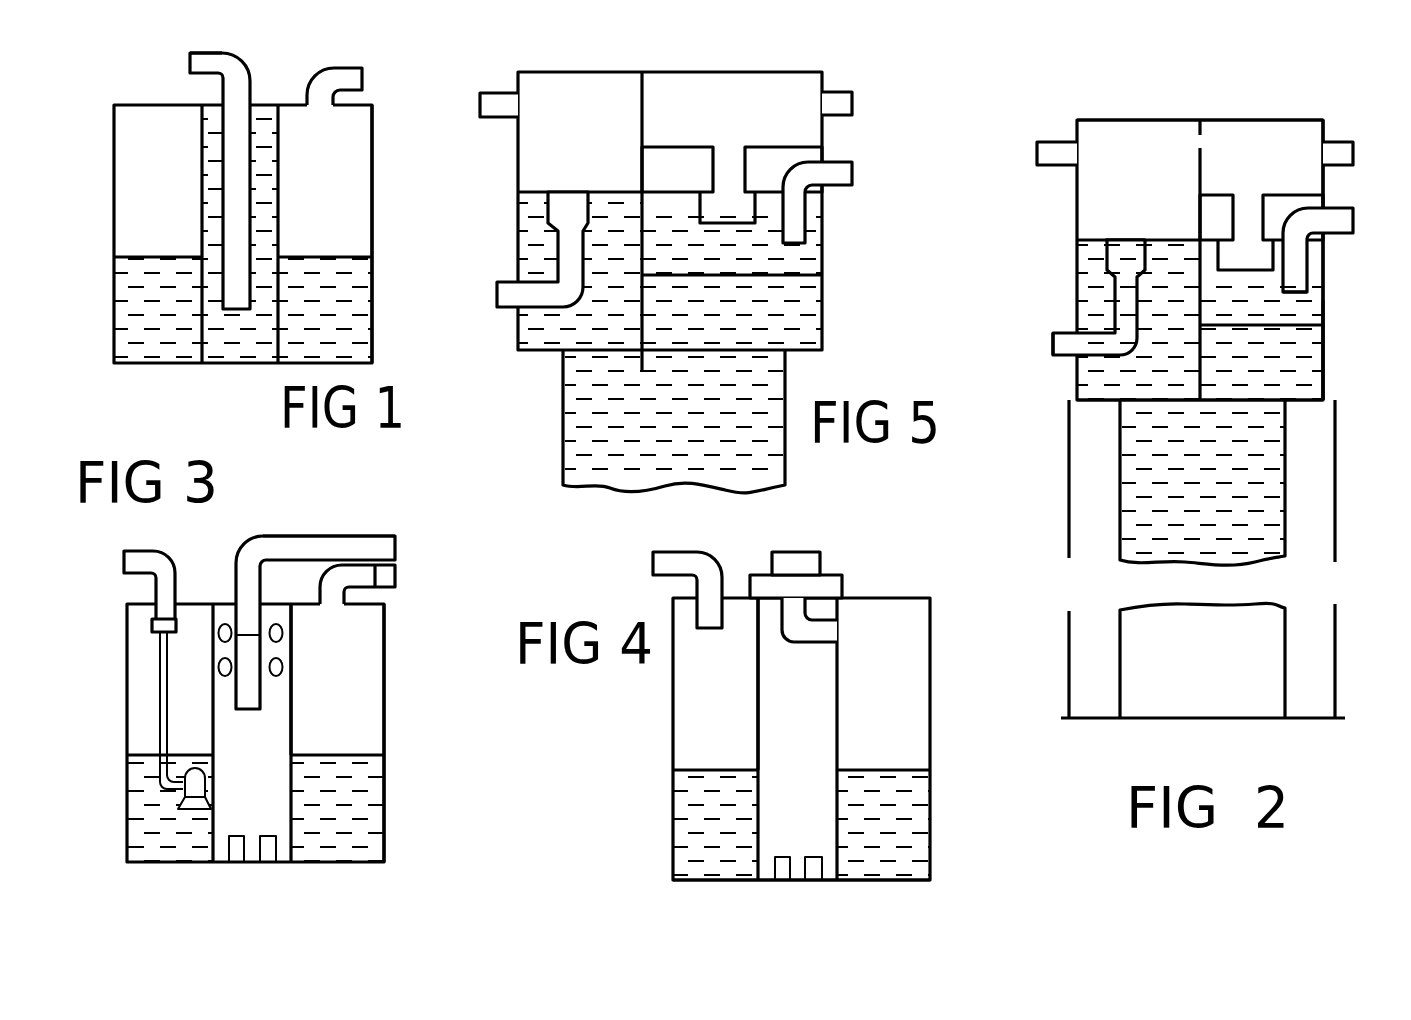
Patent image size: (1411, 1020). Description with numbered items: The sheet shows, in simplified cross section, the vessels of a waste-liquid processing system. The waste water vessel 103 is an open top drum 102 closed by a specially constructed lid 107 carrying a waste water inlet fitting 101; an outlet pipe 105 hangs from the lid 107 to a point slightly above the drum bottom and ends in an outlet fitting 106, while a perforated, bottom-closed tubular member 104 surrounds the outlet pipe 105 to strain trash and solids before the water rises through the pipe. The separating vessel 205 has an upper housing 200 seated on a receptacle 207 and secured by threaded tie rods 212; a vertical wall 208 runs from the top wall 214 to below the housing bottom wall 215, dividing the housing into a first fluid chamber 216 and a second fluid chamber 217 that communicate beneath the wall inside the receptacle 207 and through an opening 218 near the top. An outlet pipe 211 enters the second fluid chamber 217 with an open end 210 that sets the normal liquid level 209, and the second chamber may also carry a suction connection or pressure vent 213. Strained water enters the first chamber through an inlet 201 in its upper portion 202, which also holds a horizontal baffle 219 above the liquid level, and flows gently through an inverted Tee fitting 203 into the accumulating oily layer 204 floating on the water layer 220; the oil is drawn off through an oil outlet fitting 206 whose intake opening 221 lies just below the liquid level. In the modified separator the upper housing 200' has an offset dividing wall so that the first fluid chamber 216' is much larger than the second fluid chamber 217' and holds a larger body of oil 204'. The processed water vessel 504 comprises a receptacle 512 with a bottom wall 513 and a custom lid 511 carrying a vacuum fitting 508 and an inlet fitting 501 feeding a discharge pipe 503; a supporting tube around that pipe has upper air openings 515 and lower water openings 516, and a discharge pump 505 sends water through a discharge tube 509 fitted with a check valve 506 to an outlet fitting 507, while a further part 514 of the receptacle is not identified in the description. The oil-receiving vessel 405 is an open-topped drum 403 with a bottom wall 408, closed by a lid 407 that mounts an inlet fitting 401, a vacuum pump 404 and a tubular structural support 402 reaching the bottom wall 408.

In FIG. 1, the waste water inlet fitting 101 is at (362, 80).
In FIG. 1, the open top drum 102 is at (370, 213).
In FIG. 1, the waste water vessel 103 is at (340, 215).
In FIG. 1, the tubular member 104 is at (210, 218).
In FIG. 1, the outlet pipe 105 is at (222, 173).
In FIG. 1, the outlet fitting 106 is at (190, 62).
In FIG. 1, the lid 107 is at (140, 104).
In FIG. 2, the upper housing 200 is at (1186, 238).
In FIG. 2, the inlet 201 is at (1353, 148).
In FIG. 2, the upper portion 202 is at (1293, 132).
In FIG. 2, the inverted Tee fitting 203 is at (1253, 240).
In FIG. 2, the oily layer 204 is at (1299, 324).
In FIG. 2, the separating vessel 205 is at (1122, 217).
In FIG. 2, the oil outlet fitting 206 is at (1353, 213).
In FIG. 2, the receptacle 207 is at (1286, 458).
In FIG. 2, the vertical wall 208 is at (1202, 355).
In FIG. 2, the normal liquid level 209 is at (1097, 233).
In FIG. 2, the open end 210 is at (1123, 236).
In FIG. 2, the outlet pipe 211 is at (1053, 344).
In FIG. 2, the threaded tie rods 212 is at (1070, 488).
In FIG. 2, the suction connection 213 is at (1037, 148).
In FIG. 2, the top wall 214 is at (1227, 120).
In FIG. 2, the bottom wall 215 is at (1092, 398).
In FIG. 2, the first fluid chamber 216 is at (1261, 194).
In FIG. 2, the second fluid chamber 217 is at (1138, 144).
In FIG. 2, the opening 218 is at (1195, 143).
In FIG. 2, the horizontal baffle 219 is at (1290, 193).
In FIG. 2, the water layer 220 is at (1305, 327).
In FIG. 2, the intake opening 221 is at (1295, 242).
In FIG. 5, the upper housing 200' is at (699, 211).
In FIG. 5, the body of oil 204' is at (701, 327).
In FIG. 5, the first fluid chamber 216' is at (732, 151).
In FIG. 5, the second fluid chamber 217' is at (580, 150).
In FIG. 4, the inlet fitting 401 is at (652, 563).
In FIG. 4, the structural support 402 is at (758, 700).
In FIG. 4, the open-topped drum 403 is at (673, 755).
In FIG. 4, the vacuum pump 404 is at (812, 552).
In FIG. 4, the oil-receiving vessel 405 is at (860, 677).
In FIG. 4, the lid 407 is at (897, 597).
In FIG. 4, the bottom wall 408 is at (913, 880).
In FIG. 3, the inlet fitting 501 is at (376, 535).
In FIG. 3, the discharge pipe 503 is at (293, 738).
In FIG. 3, the vessel 504 is at (320, 689).
In FIG. 3, the discharge pump 505 is at (171, 798).
In FIG. 3, the check valve 506 is at (153, 627).
In FIG. 3, the outlet fitting 507 is at (124, 562).
In FIG. 3, the fitting 508 is at (396, 580).
In FIG. 3, the discharge tube 509 is at (158, 678).
In FIG. 3, the lid 511 is at (198, 604).
In FIG. 3, the receptacle 512 is at (382, 700).
In FIG. 3, the bottom wall 513 is at (345, 864).
In FIG. 3, the housing wall 514 is at (295, 664).
In FIG. 3, the openings 515 is at (282, 629).
In FIG. 3, the openings 516 is at (236, 858).